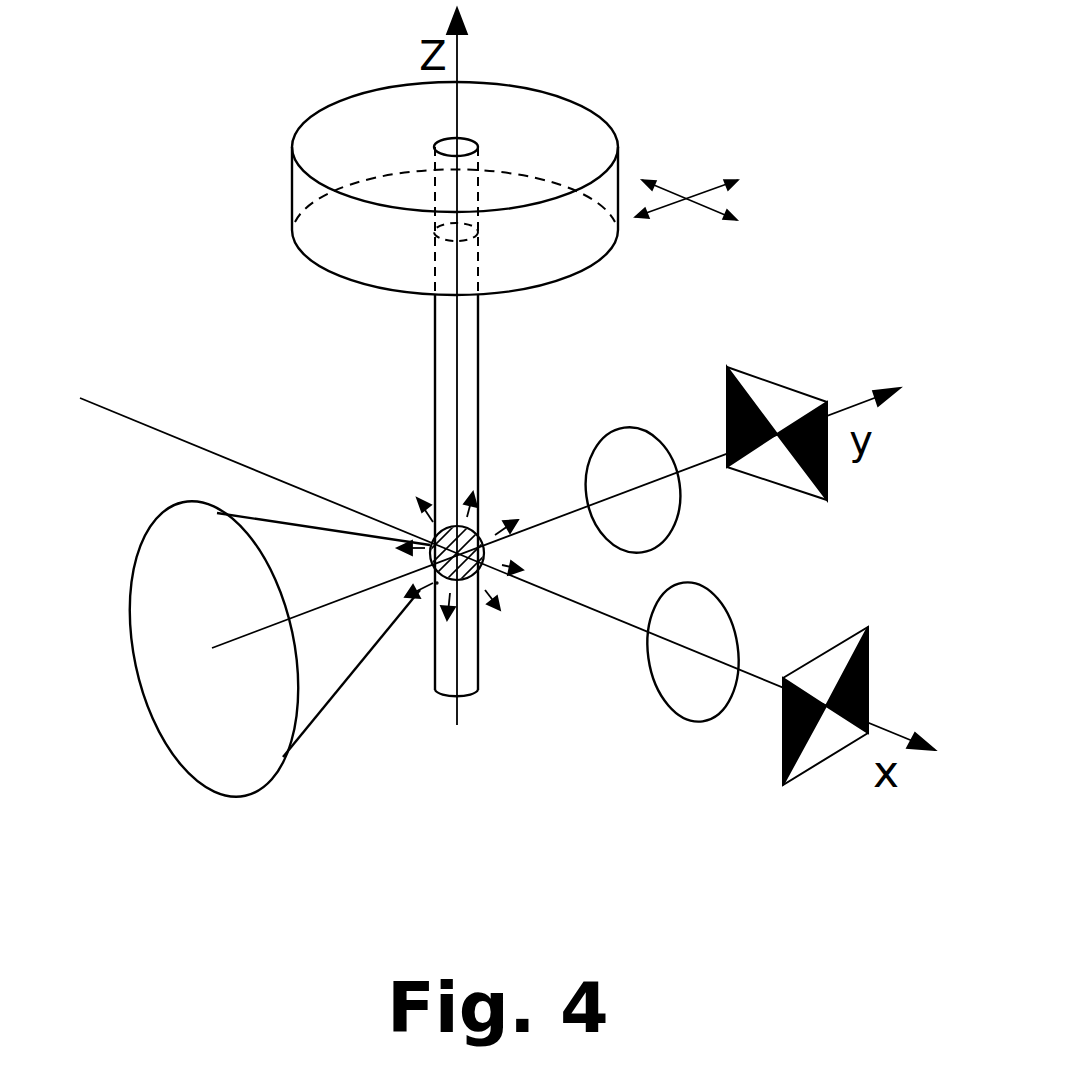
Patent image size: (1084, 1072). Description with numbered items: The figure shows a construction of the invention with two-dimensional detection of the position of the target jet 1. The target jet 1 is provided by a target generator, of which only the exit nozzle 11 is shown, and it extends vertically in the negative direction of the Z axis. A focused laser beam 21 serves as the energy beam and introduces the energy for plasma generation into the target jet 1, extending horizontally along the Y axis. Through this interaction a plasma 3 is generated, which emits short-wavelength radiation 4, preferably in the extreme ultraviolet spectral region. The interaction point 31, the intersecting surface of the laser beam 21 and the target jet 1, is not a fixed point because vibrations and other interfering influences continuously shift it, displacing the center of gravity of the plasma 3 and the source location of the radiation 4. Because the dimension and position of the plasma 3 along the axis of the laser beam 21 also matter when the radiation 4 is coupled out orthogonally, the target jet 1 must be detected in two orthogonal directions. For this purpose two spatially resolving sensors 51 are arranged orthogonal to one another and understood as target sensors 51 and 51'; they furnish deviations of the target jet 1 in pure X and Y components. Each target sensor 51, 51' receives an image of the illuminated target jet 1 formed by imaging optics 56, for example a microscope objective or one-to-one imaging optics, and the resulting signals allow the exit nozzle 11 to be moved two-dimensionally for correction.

The target jet 1 is at (445, 432).
The exit nozzle 11 is at (558, 140).
The laser beam 21 is at (287, 548).
The plasma 3 is at (467, 585).
The interaction point 31 is at (437, 583).
The short-wavelength radiation 4 is at (517, 527).
The target sensor 51 is at (790, 353).
The target sensor 51' is at (830, 652).
The imaging optics 56 is at (700, 603).